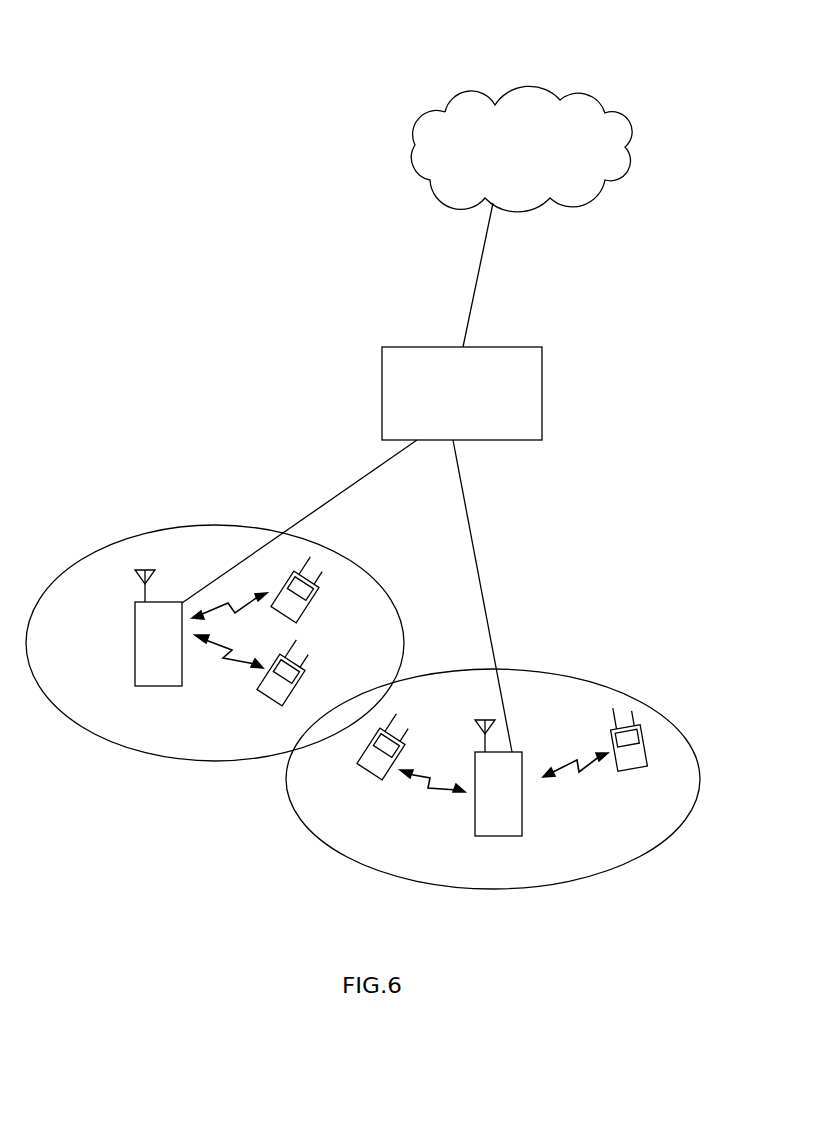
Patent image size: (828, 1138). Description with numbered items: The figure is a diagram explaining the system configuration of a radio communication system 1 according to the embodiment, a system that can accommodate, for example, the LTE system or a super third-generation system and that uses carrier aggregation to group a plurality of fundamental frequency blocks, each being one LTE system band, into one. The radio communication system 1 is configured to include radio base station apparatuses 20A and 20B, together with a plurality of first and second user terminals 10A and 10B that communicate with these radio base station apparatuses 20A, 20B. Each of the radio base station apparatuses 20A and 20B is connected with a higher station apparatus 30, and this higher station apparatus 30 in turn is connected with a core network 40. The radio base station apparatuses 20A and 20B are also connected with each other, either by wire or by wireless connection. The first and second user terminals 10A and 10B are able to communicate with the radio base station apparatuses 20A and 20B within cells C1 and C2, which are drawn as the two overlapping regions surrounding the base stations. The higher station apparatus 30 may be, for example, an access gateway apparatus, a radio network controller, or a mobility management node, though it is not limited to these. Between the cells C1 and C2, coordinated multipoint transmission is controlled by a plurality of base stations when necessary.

The radio communication system 1 is at (243, 330).
The core network 40 is at (585, 92).
The higher station apparatus 30 is at (542, 380).
The radio base station apparatus 20A is at (475, 822).
The radio base station apparatus 20B is at (135, 672).
The first user terminal 10A is at (312, 605).
The second user terminal 10B is at (296, 686).
The cell C1 is at (592, 682).
The cell C2 is at (135, 535).